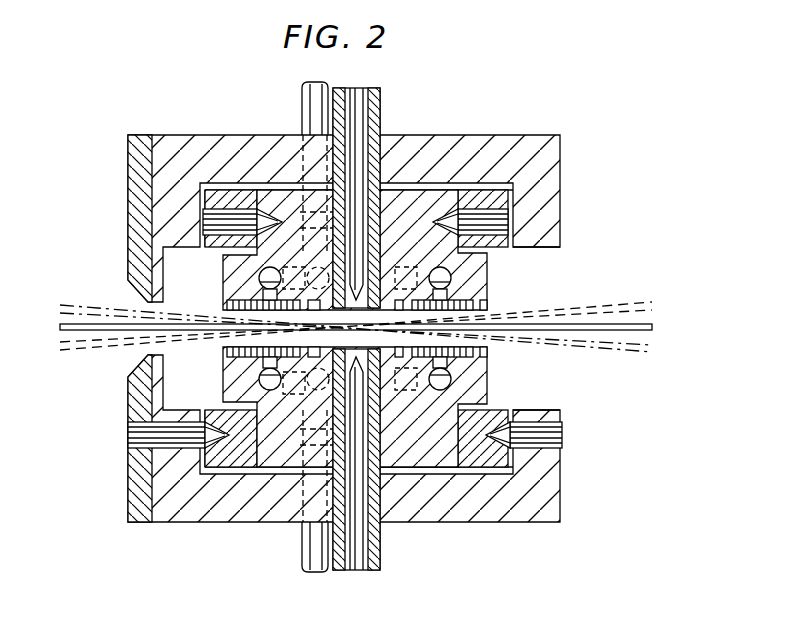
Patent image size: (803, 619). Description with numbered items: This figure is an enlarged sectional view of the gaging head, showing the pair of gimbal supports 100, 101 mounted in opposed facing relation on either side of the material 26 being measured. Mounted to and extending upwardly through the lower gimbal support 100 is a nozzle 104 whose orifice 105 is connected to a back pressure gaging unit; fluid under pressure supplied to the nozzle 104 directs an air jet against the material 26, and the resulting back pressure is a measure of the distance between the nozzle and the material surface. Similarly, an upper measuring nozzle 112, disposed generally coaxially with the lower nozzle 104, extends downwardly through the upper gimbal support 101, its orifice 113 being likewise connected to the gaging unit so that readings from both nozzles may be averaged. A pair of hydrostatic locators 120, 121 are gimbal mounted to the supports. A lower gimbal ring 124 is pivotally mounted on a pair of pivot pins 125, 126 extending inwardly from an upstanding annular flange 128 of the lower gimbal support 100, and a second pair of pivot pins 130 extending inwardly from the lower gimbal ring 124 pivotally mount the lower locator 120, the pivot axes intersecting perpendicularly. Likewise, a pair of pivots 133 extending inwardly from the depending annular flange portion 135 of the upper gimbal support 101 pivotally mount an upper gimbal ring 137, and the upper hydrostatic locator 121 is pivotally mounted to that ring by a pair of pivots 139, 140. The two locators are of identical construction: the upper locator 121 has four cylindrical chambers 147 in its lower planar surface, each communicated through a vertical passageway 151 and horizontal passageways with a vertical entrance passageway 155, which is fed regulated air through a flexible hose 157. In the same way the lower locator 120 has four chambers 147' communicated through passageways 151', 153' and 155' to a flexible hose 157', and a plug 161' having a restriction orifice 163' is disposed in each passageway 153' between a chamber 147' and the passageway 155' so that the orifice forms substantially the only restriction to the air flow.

The material 26 is at (656, 328).
The lower gimbal support 100 is at (566, 507).
The upper gimbal support 101 is at (566, 145).
The nozzle 104 is at (378, 553).
The orifice 105 is at (357, 365).
The upper measuring nozzle 112 is at (382, 107).
The orifice 113 is at (356, 294).
The lower hydrostatic locator 120 is at (492, 388).
The upper hydrostatic locator 121 is at (492, 268).
The lower gimbal ring 124 is at (236, 455).
The pivot pin 125 is at (134, 436).
The pivot pin 126 is at (550, 442).
The upstanding annular flange 128 is at (558, 409).
The pivot pins 130 is at (376, 463).
The pivots 133 is at (441, 222).
The depending annular flange portion 135 is at (558, 252).
The upper gimbal ring 137 is at (221, 245).
The pivot 139 is at (212, 222).
The pivot 140 is at (497, 218).
The cylindrical chamber 147 is at (483, 304).
The chamber 147' is at (246, 361).
The vertical passageway 151 is at (466, 287).
The passageway 151' is at (469, 368).
The passageway 153' is at (419, 391).
The vertical entrance passageway 155 is at (313, 255).
The passageway 155' is at (316, 439).
The flexible hose 157 is at (280, 168).
The flexible hose 157' is at (280, 508).
The plug 161' is at (246, 351).
The restriction orifice 163' is at (294, 387).